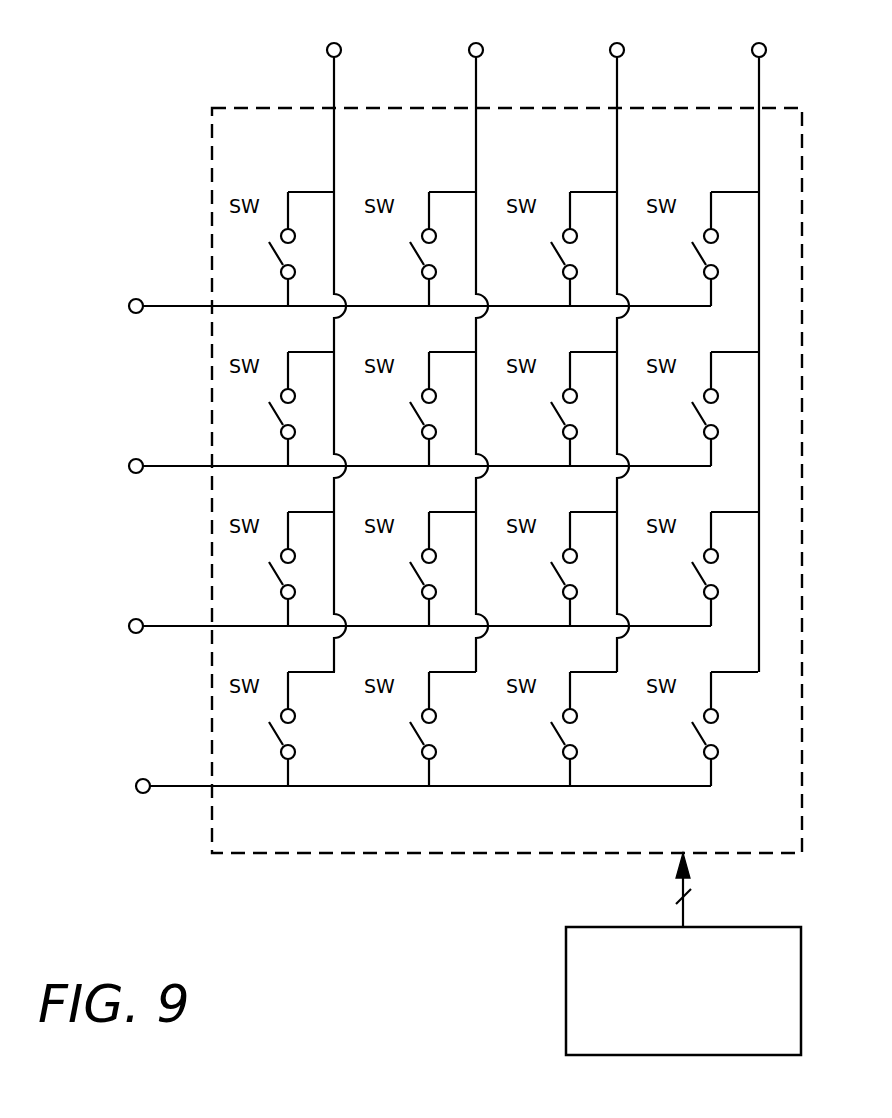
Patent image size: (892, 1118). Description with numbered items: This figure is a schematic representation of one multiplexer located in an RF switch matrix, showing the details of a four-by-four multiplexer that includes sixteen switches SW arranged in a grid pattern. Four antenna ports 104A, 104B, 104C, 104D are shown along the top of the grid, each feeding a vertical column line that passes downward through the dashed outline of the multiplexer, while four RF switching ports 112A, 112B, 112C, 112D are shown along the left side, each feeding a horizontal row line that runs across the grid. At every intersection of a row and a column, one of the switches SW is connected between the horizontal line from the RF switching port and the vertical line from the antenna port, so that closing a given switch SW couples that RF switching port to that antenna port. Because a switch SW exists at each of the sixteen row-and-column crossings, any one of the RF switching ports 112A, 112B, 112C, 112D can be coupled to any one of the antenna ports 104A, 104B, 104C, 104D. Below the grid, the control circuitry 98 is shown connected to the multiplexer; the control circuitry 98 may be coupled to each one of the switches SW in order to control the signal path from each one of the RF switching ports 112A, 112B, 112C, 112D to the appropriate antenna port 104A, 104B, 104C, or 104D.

The antenna port 104A is at (334, 36).
The antenna port 104B is at (476, 36).
The antenna port 104C is at (617, 36).
The antenna port 104D is at (759, 36).
The RF switching port 112A is at (136, 297).
The RF switching port 112B is at (136, 457).
The RF switching port 112C is at (136, 617).
The RF switching port 112D is at (143, 778).
The control circuitry 98 is at (683, 954).